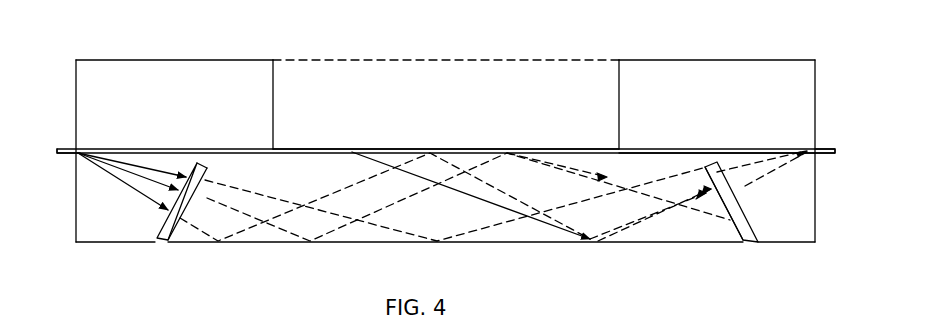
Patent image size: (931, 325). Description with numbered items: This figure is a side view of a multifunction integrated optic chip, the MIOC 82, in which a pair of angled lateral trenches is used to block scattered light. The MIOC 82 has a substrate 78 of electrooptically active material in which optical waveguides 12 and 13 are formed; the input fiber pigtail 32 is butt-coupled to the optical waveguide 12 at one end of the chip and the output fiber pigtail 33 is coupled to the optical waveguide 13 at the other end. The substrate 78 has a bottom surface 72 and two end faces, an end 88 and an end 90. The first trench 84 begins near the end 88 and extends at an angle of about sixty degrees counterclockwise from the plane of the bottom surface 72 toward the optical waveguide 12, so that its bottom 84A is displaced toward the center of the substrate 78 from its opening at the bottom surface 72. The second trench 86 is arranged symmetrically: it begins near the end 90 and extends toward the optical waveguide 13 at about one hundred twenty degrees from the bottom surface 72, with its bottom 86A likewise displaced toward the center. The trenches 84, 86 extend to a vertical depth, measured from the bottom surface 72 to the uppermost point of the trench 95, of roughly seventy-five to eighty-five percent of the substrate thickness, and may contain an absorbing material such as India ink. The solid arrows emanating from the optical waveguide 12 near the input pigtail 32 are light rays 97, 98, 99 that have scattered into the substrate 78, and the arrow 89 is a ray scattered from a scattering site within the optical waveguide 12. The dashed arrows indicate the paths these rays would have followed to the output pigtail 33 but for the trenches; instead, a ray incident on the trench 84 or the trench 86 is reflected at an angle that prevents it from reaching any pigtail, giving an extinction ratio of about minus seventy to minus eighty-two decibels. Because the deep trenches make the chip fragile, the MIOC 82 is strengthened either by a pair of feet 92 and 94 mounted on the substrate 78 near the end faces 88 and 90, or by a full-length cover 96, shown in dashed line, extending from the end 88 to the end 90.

The optical waveguide 12 is at (318, 149).
The optical waveguide 13 is at (672, 148).
The input fiber pigtail 32 is at (62, 149).
The output fiber pigtail 33 is at (831, 148).
The bottom surface 72 is at (171, 162).
The substrate 78 is at (717, 161).
The MIOC 82 is at (322, 257).
The angled lateral trench 84 is at (203, 163).
The bottom of trench 84A is at (206, 160).
The angled lateral trench 86 is at (731, 166).
The bottom of trench 86A is at (711, 162).
The end of substrate 88 is at (77, 218).
The light ray 89 is at (470, 195).
The end of substrate 90 is at (816, 193).
The foot 92 is at (273, 69).
The foot 94 is at (619, 70).
The uppermost point of the trench 95 is at (200, 160).
The full-length cover 96 is at (440, 59).
The light ray 97 is at (112, 180).
The light ray 98 is at (140, 161).
The light ray 99 is at (166, 160).